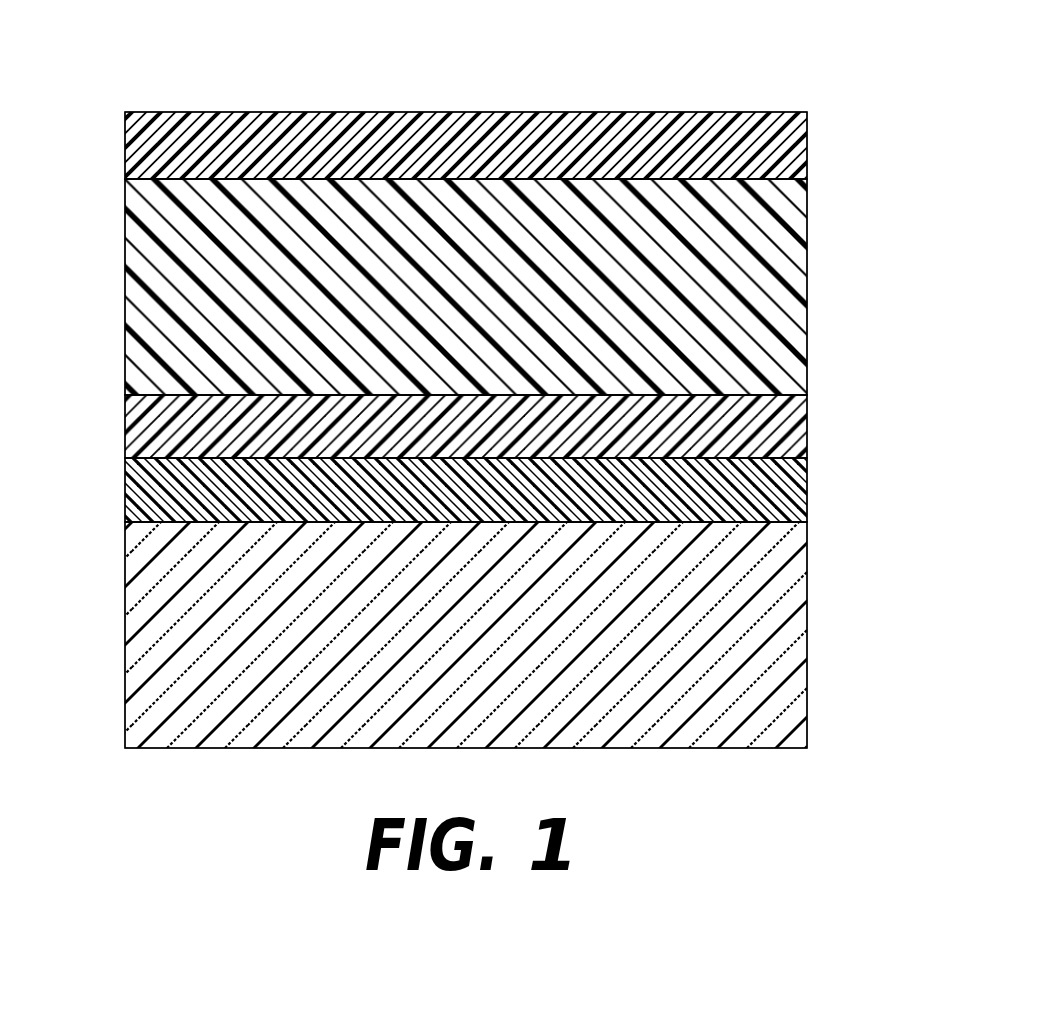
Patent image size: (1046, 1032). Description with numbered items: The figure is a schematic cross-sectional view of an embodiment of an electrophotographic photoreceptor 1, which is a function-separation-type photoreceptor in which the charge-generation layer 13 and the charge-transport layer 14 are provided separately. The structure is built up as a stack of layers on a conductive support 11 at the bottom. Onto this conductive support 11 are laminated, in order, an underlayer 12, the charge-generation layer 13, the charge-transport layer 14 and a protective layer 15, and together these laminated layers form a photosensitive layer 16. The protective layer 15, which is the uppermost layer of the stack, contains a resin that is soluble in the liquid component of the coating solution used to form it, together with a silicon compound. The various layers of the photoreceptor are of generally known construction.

The electrophotographic photoreceptor 1 is at (450, 386).
The conductive support 11 is at (790, 597).
The underlayer 12 is at (790, 490).
The charge-generation layer 13 is at (790, 428).
The charge-transport layer 14 is at (790, 265).
The protective layer 15 is at (793, 148).
The photosensitive layer 16 is at (450, 277).